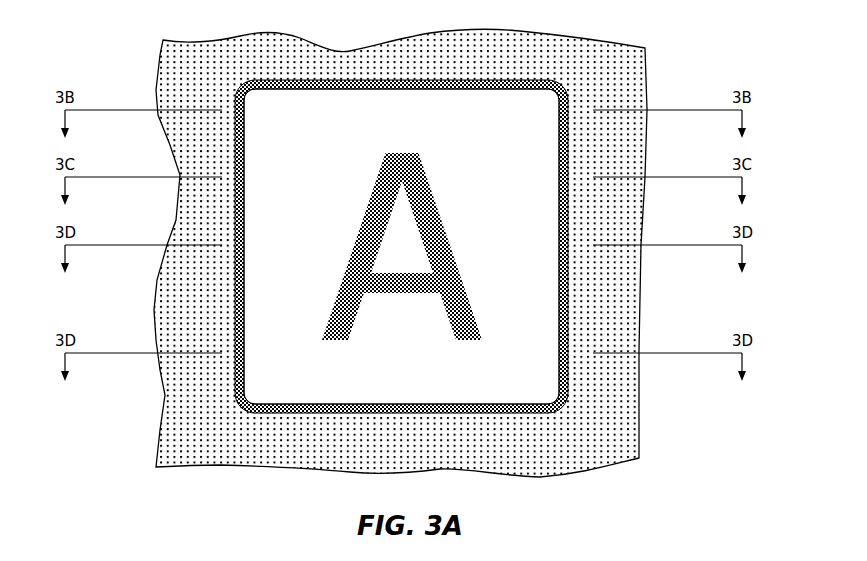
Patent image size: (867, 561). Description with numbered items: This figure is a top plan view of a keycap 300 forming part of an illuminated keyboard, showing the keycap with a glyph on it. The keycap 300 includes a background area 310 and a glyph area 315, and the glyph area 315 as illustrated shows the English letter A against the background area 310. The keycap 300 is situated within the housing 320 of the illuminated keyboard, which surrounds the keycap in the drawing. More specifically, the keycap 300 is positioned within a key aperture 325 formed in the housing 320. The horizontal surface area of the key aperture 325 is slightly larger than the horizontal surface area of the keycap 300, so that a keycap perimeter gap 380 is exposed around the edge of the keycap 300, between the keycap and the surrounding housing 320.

The keycap 300 is at (377, 239).
The background area 310 is at (280, 392).
The glyph area 315 is at (397, 152).
The housing 320 is at (377, 239).
The key aperture 325 is at (530, 418).
The keycap perimeter gap 380 is at (362, 421).